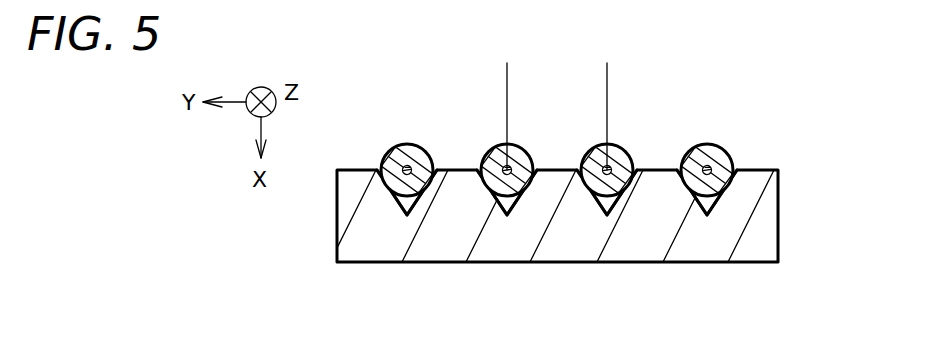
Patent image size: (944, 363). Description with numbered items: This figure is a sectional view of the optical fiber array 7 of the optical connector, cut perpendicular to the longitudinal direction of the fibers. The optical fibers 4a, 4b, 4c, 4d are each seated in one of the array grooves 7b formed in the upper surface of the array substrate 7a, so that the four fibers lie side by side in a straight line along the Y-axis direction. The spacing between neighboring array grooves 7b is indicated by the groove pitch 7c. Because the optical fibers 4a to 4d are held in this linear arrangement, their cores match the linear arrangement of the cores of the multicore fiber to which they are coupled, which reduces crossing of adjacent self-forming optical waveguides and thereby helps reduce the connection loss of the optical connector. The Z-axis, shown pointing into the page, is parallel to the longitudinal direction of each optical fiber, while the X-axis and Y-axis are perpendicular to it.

The optical fiber array 7 is at (565, 192).
The array substrate 7a is at (378, 244).
The array grooves 7b is at (407, 235).
The groove pitch 7c is at (607, 90).
The optical fiber 4a is at (385, 135).
The optical fiber 4b is at (488, 135).
The optical fiber 4c is at (630, 135).
The optical fiber 4d is at (730, 135).